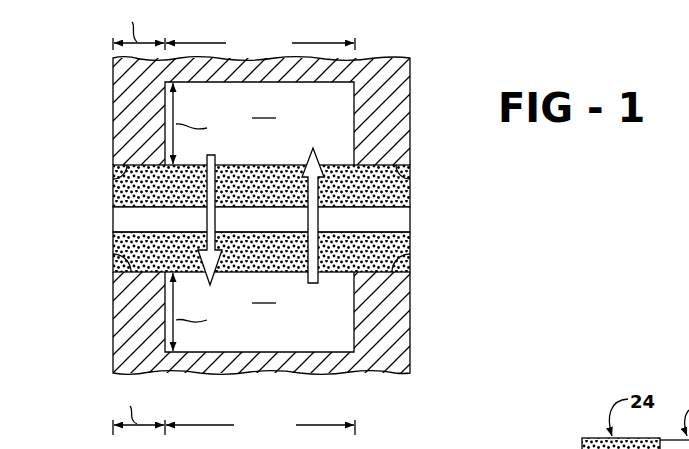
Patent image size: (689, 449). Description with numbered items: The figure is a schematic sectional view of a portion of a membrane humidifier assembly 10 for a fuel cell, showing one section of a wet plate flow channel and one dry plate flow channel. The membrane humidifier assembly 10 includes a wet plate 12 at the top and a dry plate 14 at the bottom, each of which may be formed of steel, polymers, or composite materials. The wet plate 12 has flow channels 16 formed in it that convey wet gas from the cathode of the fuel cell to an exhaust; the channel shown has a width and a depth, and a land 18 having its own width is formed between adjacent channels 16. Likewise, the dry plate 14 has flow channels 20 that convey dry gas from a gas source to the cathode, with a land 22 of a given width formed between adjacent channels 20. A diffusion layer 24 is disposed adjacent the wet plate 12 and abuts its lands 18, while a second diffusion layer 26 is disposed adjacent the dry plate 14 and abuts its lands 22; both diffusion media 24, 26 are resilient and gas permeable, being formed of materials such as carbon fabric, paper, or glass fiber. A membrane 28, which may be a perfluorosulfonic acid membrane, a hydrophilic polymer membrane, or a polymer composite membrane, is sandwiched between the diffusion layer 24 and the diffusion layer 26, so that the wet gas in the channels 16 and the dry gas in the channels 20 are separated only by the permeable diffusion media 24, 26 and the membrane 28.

The membrane humidifier assembly 10 is at (409, 49).
The wet plate 12 is at (111, 114).
The dry plate 14 is at (111, 357).
The flow channels 16 is at (259, 123).
The land 18 is at (113, 176).
The flow channels 20 is at (259, 312).
The land 22 is at (112, 253).
The diffusion layer 24 is at (111, 190).
The diffusion layer 26 is at (111, 242).
The membrane 28 is at (111, 218).